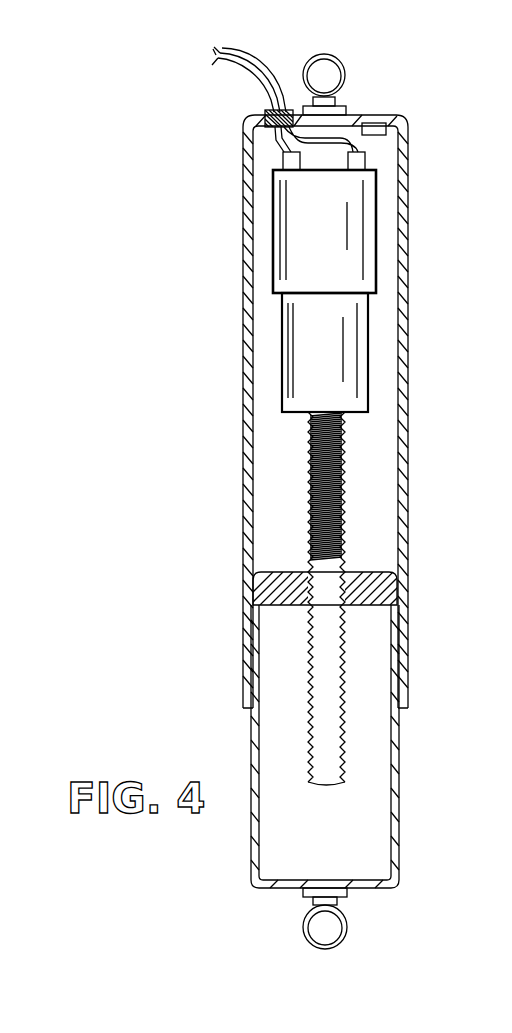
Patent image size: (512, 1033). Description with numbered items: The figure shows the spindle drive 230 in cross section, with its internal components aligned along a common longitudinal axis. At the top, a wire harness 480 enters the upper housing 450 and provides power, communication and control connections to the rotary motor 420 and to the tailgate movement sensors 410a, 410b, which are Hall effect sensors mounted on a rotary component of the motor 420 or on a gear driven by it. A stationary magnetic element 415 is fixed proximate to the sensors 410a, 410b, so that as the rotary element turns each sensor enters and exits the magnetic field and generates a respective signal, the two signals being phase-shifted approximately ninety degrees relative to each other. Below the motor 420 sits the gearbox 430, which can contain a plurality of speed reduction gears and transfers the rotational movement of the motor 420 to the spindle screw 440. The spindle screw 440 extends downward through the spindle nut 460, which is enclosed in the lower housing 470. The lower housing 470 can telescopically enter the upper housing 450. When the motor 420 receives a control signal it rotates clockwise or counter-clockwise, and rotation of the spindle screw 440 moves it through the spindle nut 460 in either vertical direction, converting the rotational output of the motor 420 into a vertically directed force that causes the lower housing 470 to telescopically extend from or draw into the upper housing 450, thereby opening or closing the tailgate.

The spindle drive 230 is at (104, 121).
The sensor 410a is at (283, 158).
The sensor 410b is at (365, 158).
The magnetic element 415 is at (375, 123).
The rotary motor 420 is at (376, 240).
The gearbox 430 is at (368, 345).
The spindle screw 440 is at (332, 497).
The upper housing 450 is at (243, 505).
The spindle nut 460 is at (385, 597).
The lower housing 470 is at (400, 778).
The wire harness 480 is at (250, 70).